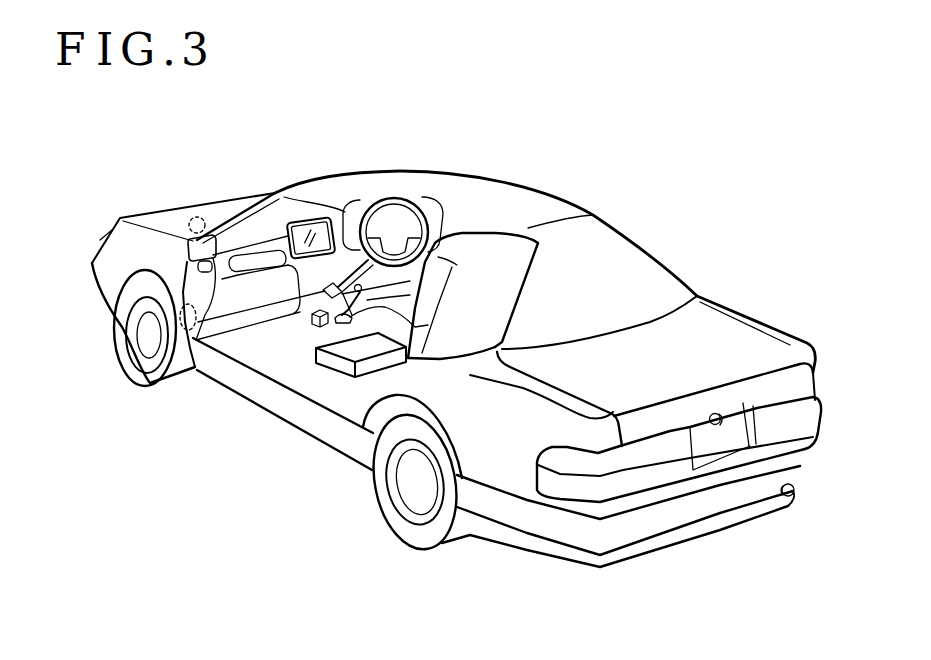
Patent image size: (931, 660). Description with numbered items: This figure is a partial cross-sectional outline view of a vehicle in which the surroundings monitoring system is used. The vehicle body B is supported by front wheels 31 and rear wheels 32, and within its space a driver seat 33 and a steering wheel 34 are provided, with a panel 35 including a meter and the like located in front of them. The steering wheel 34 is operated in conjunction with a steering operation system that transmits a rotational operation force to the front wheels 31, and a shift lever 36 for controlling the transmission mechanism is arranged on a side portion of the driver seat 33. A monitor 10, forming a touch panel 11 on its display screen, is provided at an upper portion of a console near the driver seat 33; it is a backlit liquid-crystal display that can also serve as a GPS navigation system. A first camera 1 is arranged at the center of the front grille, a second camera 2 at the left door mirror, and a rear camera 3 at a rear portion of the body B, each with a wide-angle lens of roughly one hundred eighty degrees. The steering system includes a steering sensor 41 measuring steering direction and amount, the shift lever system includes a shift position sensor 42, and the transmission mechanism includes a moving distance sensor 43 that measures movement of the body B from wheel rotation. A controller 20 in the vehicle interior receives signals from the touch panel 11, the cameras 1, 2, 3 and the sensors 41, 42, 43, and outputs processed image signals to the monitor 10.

The vehicle body B is at (540, 188).
The first camera 1 is at (197, 218).
The second camera 2 is at (196, 266).
The rear camera 3 is at (718, 410).
The monitor 10 is at (306, 200).
The touch panel 11 is at (308, 226).
The controller 20 is at (377, 365).
The front wheels 31 is at (150, 375).
The rear wheels 32 is at (400, 525).
The driver seat 33 is at (512, 278).
The steering wheel 34 is at (417, 217).
The panel 35 is at (423, 200).
The shift lever 36 is at (365, 310).
The steering sensor 41 is at (320, 293).
The shift position sensor 42 is at (312, 328).
The moving distance sensor 43 is at (196, 332).